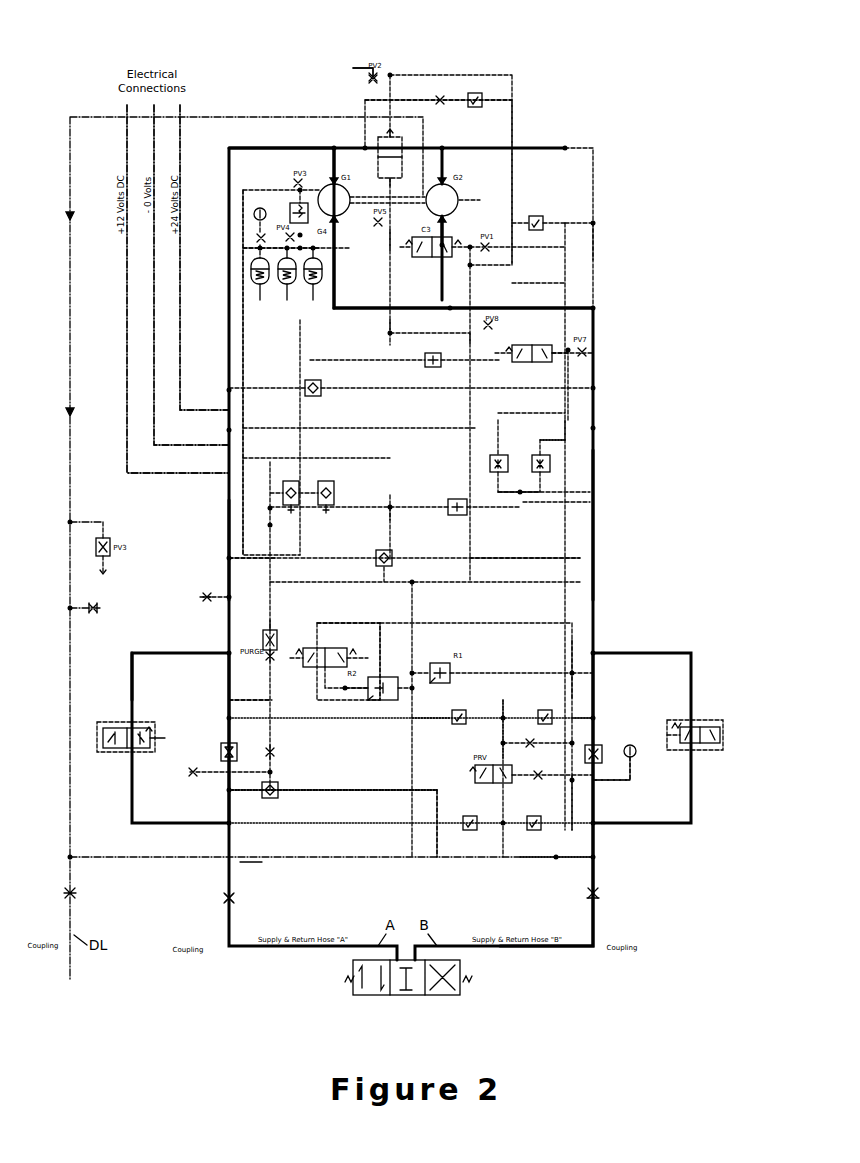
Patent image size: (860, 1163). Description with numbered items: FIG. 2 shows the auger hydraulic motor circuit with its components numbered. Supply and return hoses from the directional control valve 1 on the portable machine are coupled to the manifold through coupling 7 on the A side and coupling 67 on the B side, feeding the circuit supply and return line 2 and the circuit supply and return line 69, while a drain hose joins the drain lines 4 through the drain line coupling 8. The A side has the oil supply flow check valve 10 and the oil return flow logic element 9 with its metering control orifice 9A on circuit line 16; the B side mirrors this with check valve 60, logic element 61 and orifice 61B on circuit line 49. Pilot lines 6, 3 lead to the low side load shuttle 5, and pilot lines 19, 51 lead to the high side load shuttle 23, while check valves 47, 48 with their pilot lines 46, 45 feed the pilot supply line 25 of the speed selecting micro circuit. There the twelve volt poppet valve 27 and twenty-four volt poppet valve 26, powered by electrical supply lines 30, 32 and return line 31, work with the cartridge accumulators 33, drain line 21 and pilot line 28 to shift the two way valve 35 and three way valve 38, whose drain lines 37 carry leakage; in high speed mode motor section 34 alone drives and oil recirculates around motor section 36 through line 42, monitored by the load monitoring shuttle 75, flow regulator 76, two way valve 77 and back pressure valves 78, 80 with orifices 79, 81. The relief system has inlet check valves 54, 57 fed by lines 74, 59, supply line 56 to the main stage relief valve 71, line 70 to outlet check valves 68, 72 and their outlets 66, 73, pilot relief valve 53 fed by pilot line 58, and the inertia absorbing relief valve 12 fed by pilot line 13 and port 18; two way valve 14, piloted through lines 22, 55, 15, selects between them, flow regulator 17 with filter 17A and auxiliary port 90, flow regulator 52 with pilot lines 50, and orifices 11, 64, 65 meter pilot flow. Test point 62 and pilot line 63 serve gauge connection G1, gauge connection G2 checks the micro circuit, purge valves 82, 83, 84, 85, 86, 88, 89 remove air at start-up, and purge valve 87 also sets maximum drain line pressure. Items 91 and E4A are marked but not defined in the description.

The directional control valve 1 is at (353, 990).
The circuit supply and return line A 2 is at (290, 950).
The pilot line B 3 is at (349, 792).
The drain lines 4 is at (418, 582).
The low side load shuttle 5 is at (273, 798).
The pilot line A 6 is at (252, 868).
The oil supply and return coupling A 7 is at (227, 902).
The drain line coupling 8 is at (68, 899).
The A side oil return flow logic element 9 is at (103, 742).
The metering control orifice 9A is at (150, 740).
The A side oil supply flow check valve 10 is at (225, 760).
The metering control orifice 11 is at (278, 754).
The pilot relief valve R2 12 is at (388, 700).
The pilot supply line 13 is at (343, 690).
The two way directional control valve 14 is at (312, 667).
The pilot lines 15 is at (270, 700).
The circuit line A 16 is at (132, 665).
The pressure compensated flow regulator 17 is at (257, 638).
The flow regulator filter 17A is at (265, 652).
The port A2 18 is at (205, 597).
The pilot line A 19 is at (250, 562).
The micro circuit drain line 21 is at (300, 530).
The pilot supply line 22 is at (367, 652).
The high side load shuttle 23 is at (390, 548).
The pilot supply line 25 is at (415, 506).
The poppet valve 26 is at (335, 497).
The poppet valve 27 is at (283, 495).
The oil pilot line 28 is at (258, 250).
The electrical supply line 30 is at (127, 338).
The electrical return line 31 is at (154, 300).
The electrical supply line 32 is at (180, 262).
The micro circuit cartridge accumulators 33 is at (313, 290).
The hydraulic motor section 1 34 is at (318, 195).
The two way directional control valve 35 is at (395, 137).
The hydraulic motor section 2 36 is at (460, 233).
The oil drain lines 37 is at (470, 445).
The three way directional control valve 38 is at (460, 200).
The recirculation oil circuit line 42 is at (575, 248).
The B pilot supply line 45 is at (560, 443).
The A pilot supply line 46 is at (500, 445).
The micro circuit supply check valve A 47 is at (560, 413).
The micro circuit supply check valve B 48 is at (552, 465).
The circuit line B 49 is at (691, 685).
The oil pilot lines 50 is at (523, 503).
The pilot line B 51 is at (527, 557).
The pressure compensated flow regulator 52 is at (462, 515).
The pilot relief valve R1 53 is at (432, 665).
The A inlet check valve 54 is at (462, 710).
The piloting line 55 is at (533, 623).
The oil supply line 56 is at (502, 735).
The B inlet check valve 57 is at (545, 708).
The pilot supply line 58 is at (577, 652).
The B inlet line 59 is at (580, 713).
The B side oil supply flow check valve 60 is at (602, 748).
The B side oil return flow logic element 61 is at (720, 735).
The metering control orifice 61B is at (667, 732).
The test point 62 is at (638, 768).
The oil pilot line 63 is at (620, 782).
The metering control orifice 64 is at (570, 790).
The metering control orifice 65 is at (545, 782).
The B outlet 66 is at (598, 893).
The oil supply and return coupling B 67 is at (594, 904).
The B outlet check valve 68 is at (556, 860).
The circuit supply and return line B 69 is at (540, 947).
The oil supply line 70 is at (532, 834).
The main stage pressure relief valve 71 is at (492, 795).
The A outlet check valve 72 is at (470, 834).
The A outlet 73 is at (422, 835).
The A inlet line 74 is at (435, 722).
The high speed load monitoring shuttle 75 is at (305, 384).
The load monitoring flow regulator 76 is at (433, 367).
The two way directional control valve 77 is at (570, 336).
The high speed back pressure load monitoring valve 78 is at (545, 222).
The metering control orifice 79 is at (583, 217).
The high speed back pressure load monitoring valve 80 is at (480, 95).
The metering control orifice 81 is at (443, 97).
The purge valve PV1 82 is at (593, 232).
The purge valve PV2 83 is at (355, 68).
The purge valve PV3 84 is at (298, 180).
The purge valve PV4 85 is at (286, 236).
The purge valve PV5 86 is at (388, 243).
The purge valve PV6 87 is at (110, 538).
The purge valve PV7 88 is at (570, 350).
The purge valve PV8 89 is at (580, 283).
The P port 90 is at (190, 772).
The valve 91 is at (95, 610).
The test point connection G1 is at (640, 752).
The test point connection G2 is at (254, 212).
The valve E4A is at (530, 740).